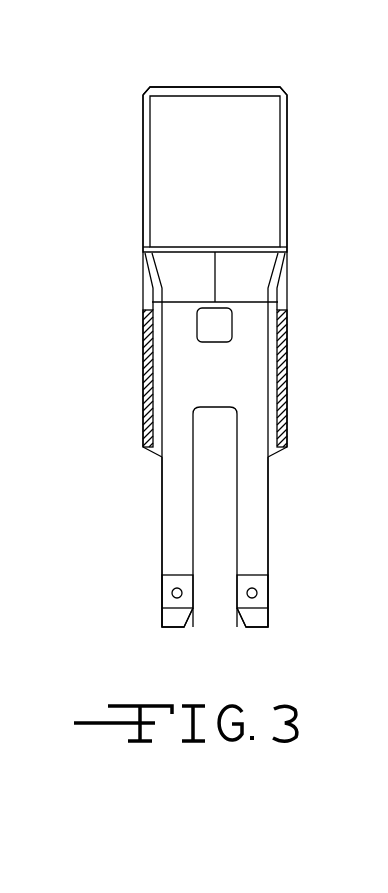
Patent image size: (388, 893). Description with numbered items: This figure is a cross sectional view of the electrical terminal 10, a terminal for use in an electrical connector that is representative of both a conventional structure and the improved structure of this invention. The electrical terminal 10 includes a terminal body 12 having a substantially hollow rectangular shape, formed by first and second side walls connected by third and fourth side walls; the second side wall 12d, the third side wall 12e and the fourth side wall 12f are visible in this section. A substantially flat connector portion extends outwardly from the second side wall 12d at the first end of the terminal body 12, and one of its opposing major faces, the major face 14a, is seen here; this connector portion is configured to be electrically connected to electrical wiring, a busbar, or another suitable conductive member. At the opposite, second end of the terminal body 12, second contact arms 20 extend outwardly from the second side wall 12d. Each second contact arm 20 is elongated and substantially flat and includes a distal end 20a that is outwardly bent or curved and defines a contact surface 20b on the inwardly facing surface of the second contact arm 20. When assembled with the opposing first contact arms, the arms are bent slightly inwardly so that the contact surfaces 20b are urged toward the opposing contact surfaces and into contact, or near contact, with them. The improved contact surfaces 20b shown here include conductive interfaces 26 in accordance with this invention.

The electrical terminal 10 is at (128, 129).
The terminal body 12 is at (119, 348).
The second side wall 12d is at (228, 378).
The third side wall 12e is at (143, 399).
The fourth side wall 12f is at (287, 408).
The major face 14a is at (225, 168).
The second contact arm 20 is at (170, 486).
The distal end 20a is at (163, 628).
The contact surface 20b is at (163, 580).
The conductive interface 26 is at (171, 592).